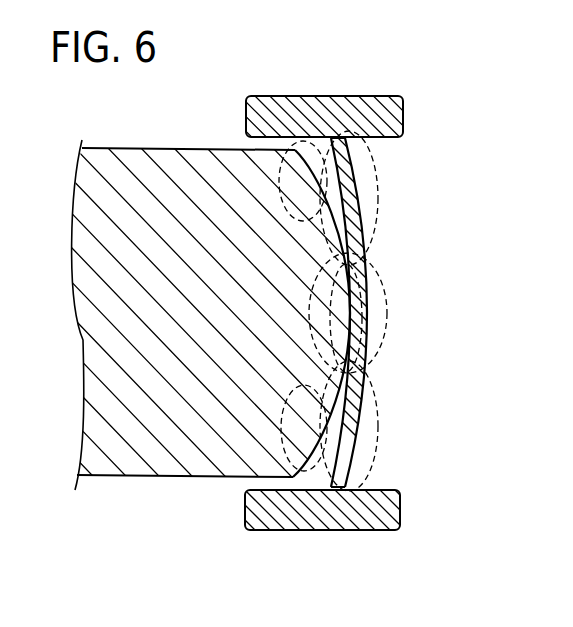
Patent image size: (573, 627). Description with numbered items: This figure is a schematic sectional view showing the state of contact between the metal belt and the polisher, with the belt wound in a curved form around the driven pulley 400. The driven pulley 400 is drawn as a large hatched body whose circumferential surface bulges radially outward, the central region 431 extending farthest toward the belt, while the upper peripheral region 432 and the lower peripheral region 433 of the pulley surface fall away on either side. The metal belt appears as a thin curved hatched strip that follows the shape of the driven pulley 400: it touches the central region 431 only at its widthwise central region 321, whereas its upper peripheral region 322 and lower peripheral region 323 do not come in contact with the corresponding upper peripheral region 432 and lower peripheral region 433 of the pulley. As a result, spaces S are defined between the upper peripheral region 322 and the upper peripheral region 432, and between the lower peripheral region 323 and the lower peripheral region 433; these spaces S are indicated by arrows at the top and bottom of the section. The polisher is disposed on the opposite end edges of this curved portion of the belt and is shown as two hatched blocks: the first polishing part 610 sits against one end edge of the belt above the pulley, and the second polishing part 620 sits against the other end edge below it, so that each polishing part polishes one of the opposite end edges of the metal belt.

The driven pulley 400 is at (118, 443).
The first polishing part 610 is at (403, 112).
The second polishing part 620 is at (400, 511).
The widthwise central region 321 is at (387, 303).
The upper peripheral region 322 is at (377, 180).
The lower peripheral region 323 is at (376, 443).
The central region 431 is at (310, 312).
The upper peripheral region 432 is at (290, 214).
The lower peripheral region 433 is at (292, 416).
The spaces S is at (314, 147).